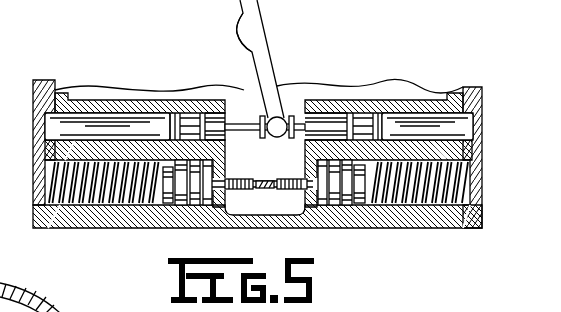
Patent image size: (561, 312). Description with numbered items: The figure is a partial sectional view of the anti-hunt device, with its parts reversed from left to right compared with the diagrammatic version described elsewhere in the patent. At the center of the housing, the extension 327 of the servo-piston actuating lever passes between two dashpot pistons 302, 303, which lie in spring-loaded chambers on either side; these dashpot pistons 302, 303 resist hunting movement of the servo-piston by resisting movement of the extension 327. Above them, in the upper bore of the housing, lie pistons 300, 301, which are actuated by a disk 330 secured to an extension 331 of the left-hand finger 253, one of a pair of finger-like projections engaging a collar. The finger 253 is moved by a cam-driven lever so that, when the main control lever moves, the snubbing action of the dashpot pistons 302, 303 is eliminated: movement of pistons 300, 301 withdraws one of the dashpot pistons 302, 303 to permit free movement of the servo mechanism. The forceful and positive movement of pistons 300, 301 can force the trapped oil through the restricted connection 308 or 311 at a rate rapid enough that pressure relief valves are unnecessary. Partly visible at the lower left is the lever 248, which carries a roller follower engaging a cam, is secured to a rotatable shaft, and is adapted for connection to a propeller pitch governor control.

The restricted connection 311 is at (108, 110).
The piston 301 is at (187, 118).
The finger-like projection 253 is at (238, 29).
The extension 331 is at (265, 56).
The disk 330 is at (281, 117).
The piston 300 is at (367, 118).
The restricted connection 308 is at (422, 100).
The dashpot piston 303 is at (183, 210).
The extension of servo-piston actuating lever 327 is at (262, 188).
The dashpot piston 302 is at (345, 207).
The lever 248 is at (30, 285).